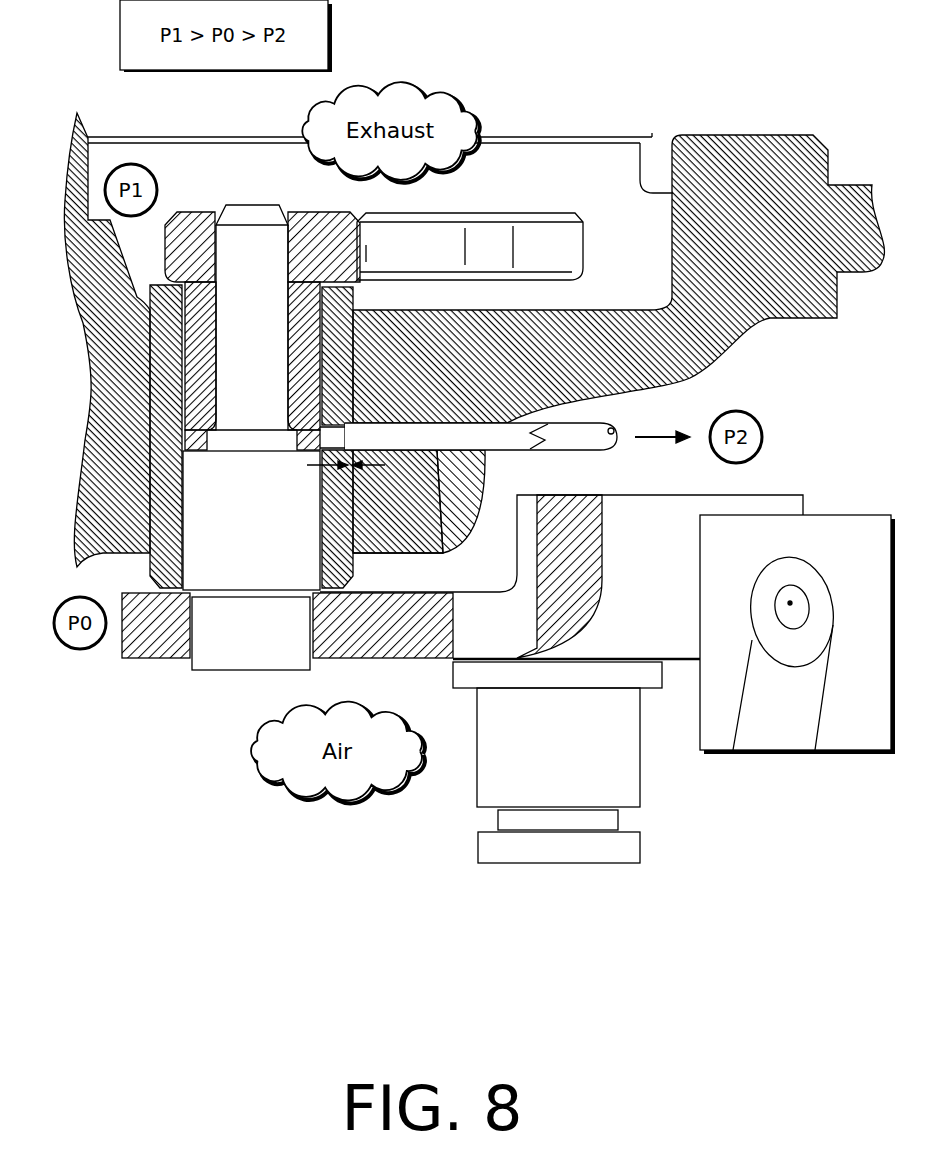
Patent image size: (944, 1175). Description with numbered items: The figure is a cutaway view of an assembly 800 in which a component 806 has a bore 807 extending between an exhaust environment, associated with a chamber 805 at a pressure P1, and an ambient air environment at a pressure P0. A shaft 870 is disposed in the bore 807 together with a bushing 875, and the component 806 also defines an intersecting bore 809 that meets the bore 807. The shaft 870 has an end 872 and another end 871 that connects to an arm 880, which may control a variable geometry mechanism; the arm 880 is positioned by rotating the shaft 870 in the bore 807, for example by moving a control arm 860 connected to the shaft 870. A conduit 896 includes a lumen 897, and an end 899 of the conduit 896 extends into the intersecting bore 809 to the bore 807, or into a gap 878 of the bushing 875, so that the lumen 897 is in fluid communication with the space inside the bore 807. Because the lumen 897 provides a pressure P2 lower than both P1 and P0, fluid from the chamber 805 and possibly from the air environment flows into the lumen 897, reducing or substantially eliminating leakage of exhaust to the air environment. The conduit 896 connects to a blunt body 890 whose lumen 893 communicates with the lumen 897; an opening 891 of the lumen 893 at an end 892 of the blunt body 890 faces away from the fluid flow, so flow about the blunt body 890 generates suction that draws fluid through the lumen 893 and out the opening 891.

The assembly 800 is at (147, 718).
The chamber 805 is at (382, 204).
The component 806 is at (429, 372).
The bore 807 is at (356, 555).
The intersecting bore 809 is at (450, 555).
The control arm 860 is at (365, 640).
The shaft 870 is at (232, 532).
The end 871 is at (253, 208).
The end 872 is at (257, 673).
The bushing 875 is at (163, 377).
The gap 878 is at (317, 453).
The arm 880 is at (478, 213).
The blunt body 890 is at (797, 634).
The opening 891 is at (795, 587).
The end 892 is at (805, 557).
The lumen 893 is at (790, 603).
The conduit 896 is at (580, 447).
The lumen 897 is at (493, 435).
The end 899 is at (345, 437).